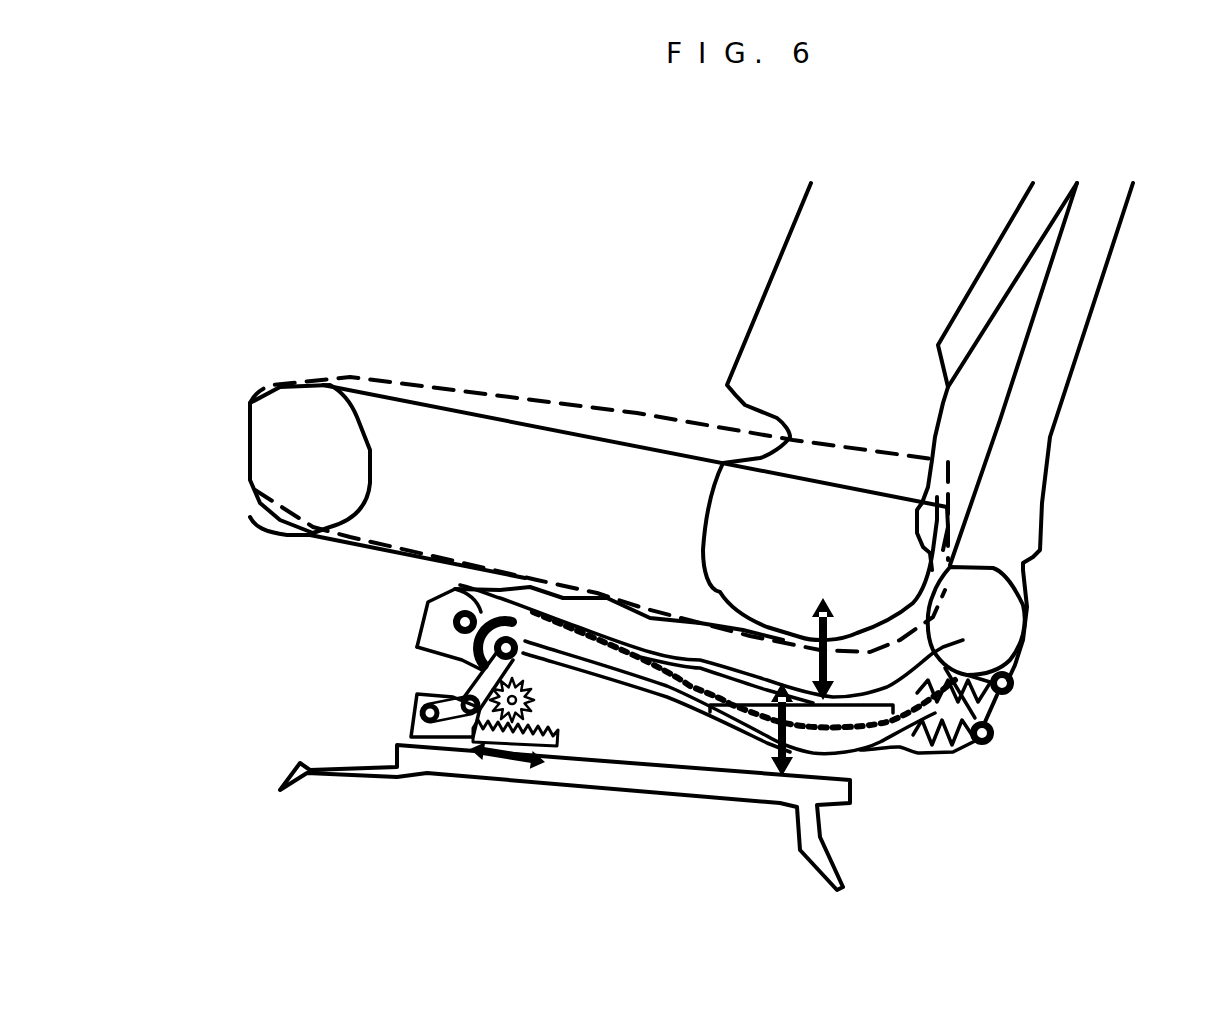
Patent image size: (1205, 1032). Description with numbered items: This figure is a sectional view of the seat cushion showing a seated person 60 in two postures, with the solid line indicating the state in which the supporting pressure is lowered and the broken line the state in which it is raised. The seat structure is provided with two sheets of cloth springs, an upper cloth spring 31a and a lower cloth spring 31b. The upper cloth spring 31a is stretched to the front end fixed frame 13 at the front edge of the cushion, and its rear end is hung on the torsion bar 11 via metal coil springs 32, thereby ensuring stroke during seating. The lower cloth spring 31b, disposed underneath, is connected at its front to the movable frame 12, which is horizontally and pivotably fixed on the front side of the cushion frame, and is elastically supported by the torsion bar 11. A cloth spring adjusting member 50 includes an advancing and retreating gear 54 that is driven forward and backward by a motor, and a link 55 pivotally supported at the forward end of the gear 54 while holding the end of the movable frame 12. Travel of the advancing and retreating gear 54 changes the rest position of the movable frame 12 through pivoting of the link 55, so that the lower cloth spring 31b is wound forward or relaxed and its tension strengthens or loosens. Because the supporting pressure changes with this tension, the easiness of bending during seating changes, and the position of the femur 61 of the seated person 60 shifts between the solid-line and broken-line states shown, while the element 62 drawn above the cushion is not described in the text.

The seated person 60 is at (527, 165).
The femur 61 is at (446, 404).
The seat back 62 is at (784, 229).
The front end fixed frame 13 is at (454, 619).
The movable frame 12 is at (517, 654).
The link 55 is at (468, 682).
The cloth spring adjusting member 50 is at (397, 705).
The advancing and retreating gear 54 is at (474, 716).
The upper cloth spring 31a is at (737, 705).
The lower cloth spring 31b is at (607, 690).
The metal coil spring 32 is at (973, 702).
The torsion bar 11 is at (952, 757).